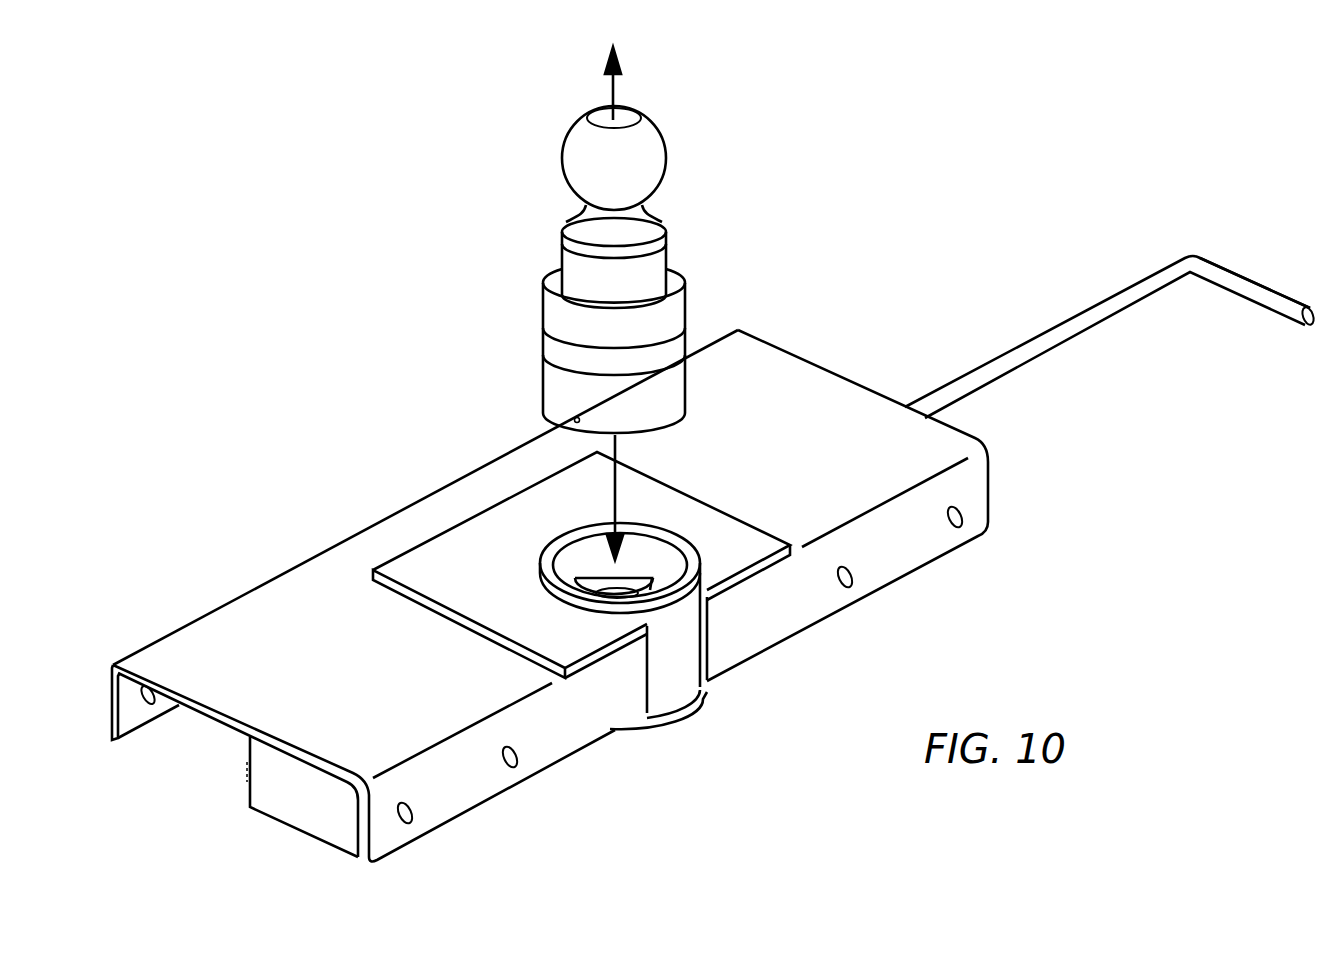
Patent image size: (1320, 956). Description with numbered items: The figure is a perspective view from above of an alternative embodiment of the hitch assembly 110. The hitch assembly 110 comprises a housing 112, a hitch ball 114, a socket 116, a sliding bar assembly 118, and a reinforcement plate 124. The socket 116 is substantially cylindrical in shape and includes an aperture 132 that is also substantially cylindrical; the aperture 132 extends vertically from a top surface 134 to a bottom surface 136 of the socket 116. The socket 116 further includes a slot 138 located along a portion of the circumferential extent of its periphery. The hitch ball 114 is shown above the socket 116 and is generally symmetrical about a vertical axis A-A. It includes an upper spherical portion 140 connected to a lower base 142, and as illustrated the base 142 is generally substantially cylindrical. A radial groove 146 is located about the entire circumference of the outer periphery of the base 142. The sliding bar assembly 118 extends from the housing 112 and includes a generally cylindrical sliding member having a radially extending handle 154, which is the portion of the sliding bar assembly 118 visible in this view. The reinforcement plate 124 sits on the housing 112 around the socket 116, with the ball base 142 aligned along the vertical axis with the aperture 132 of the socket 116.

The hitch assembly 110 is at (908, 150).
The housing 112 is at (203, 722).
The hitch ball 114 is at (625, 269).
The socket 116 is at (708, 585).
The sliding bar assembly 118 is at (1059, 328).
The reinforcement plate 124 is at (458, 583).
The aperture 132 is at (672, 546).
The top surface 134 is at (706, 582).
The bottom surface 136 is at (711, 697).
The slot 138 is at (631, 572).
The upper spherical portion 140 is at (601, 182).
The base 142 is at (625, 349).
The radial groove 146 is at (688, 345).
The handle 154 is at (1237, 280).